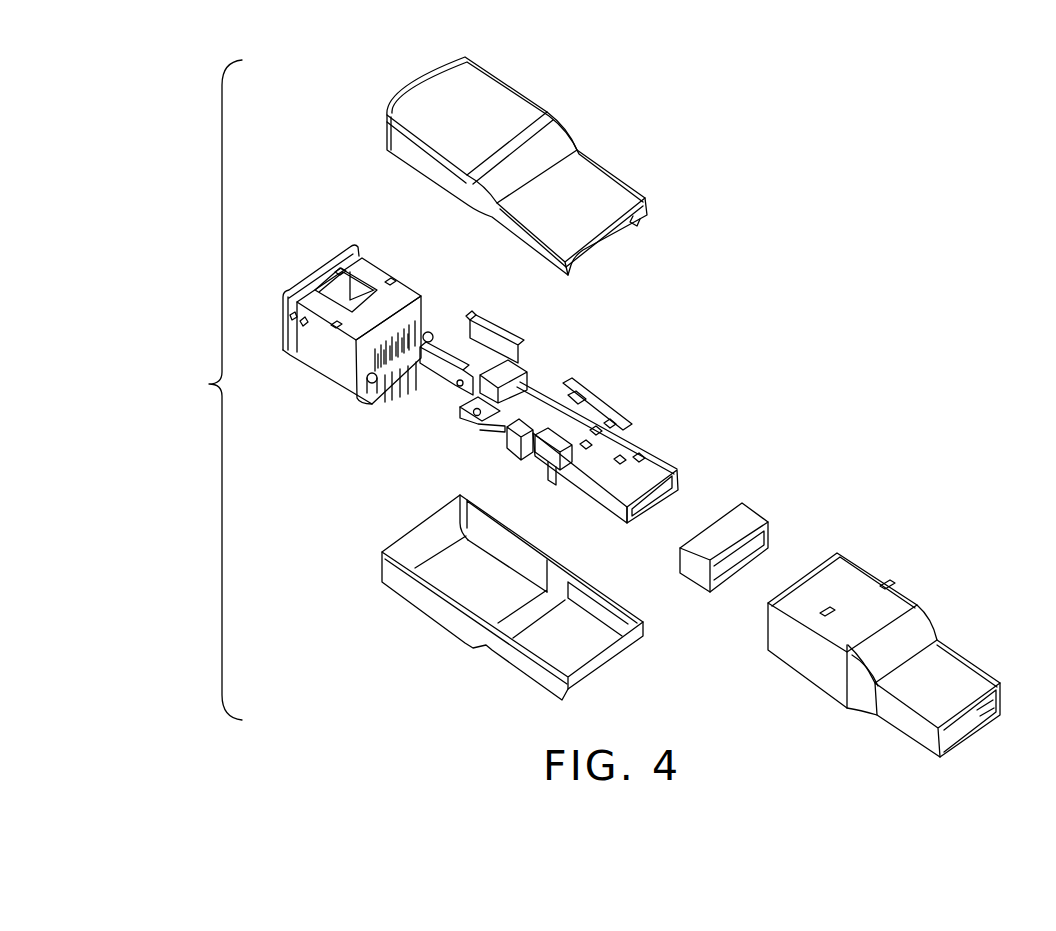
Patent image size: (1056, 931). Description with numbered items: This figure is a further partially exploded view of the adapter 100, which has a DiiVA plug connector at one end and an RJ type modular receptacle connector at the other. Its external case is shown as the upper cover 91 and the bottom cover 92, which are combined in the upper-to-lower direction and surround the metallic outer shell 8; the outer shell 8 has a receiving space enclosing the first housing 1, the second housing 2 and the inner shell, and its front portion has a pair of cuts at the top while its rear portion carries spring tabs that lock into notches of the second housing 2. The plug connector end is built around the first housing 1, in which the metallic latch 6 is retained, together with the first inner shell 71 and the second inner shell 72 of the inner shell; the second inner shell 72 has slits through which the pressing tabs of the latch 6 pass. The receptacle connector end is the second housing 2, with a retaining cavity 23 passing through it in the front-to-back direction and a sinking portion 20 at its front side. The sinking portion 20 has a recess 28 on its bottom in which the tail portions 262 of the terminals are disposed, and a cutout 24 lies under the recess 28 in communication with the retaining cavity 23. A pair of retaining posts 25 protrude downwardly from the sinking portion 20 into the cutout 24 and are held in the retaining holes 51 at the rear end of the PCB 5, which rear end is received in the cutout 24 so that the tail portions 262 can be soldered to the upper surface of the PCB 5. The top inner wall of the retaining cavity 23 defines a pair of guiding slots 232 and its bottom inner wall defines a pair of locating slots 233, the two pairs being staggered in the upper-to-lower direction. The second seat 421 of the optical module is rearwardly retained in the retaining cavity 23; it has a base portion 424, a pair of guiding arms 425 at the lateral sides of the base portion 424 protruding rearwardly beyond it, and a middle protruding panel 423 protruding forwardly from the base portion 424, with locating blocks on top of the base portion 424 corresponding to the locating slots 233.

The adapter 100 is at (198, 390).
The bottom cover 92 is at (567, 118).
The upper cover 91 is at (420, 628).
The second housing 2 is at (318, 353).
The sinking portion 20 is at (360, 392).
The retaining cavity 23 is at (380, 384).
The guiding slots 232 is at (421, 333).
The locating slots 233 is at (322, 352).
The cutout 24 is at (430, 333).
The retaining posts 25 is at (477, 358).
The tail portions 262 is at (388, 375).
The recess 28 is at (406, 382).
The second seat 421 is at (518, 349).
The middle protruding panel 423 is at (544, 390).
The base portion 424 is at (475, 319).
The guiding arms 425 is at (489, 325).
The PCB 5 is at (512, 441).
The retaining holes 51 is at (477, 417).
The metallic latch 6 is at (530, 449).
The first housing 1 is at (555, 474).
The first inner shell 71 is at (652, 468).
The second inner shell 72 is at (770, 510).
The outer shell 8 is at (928, 605).